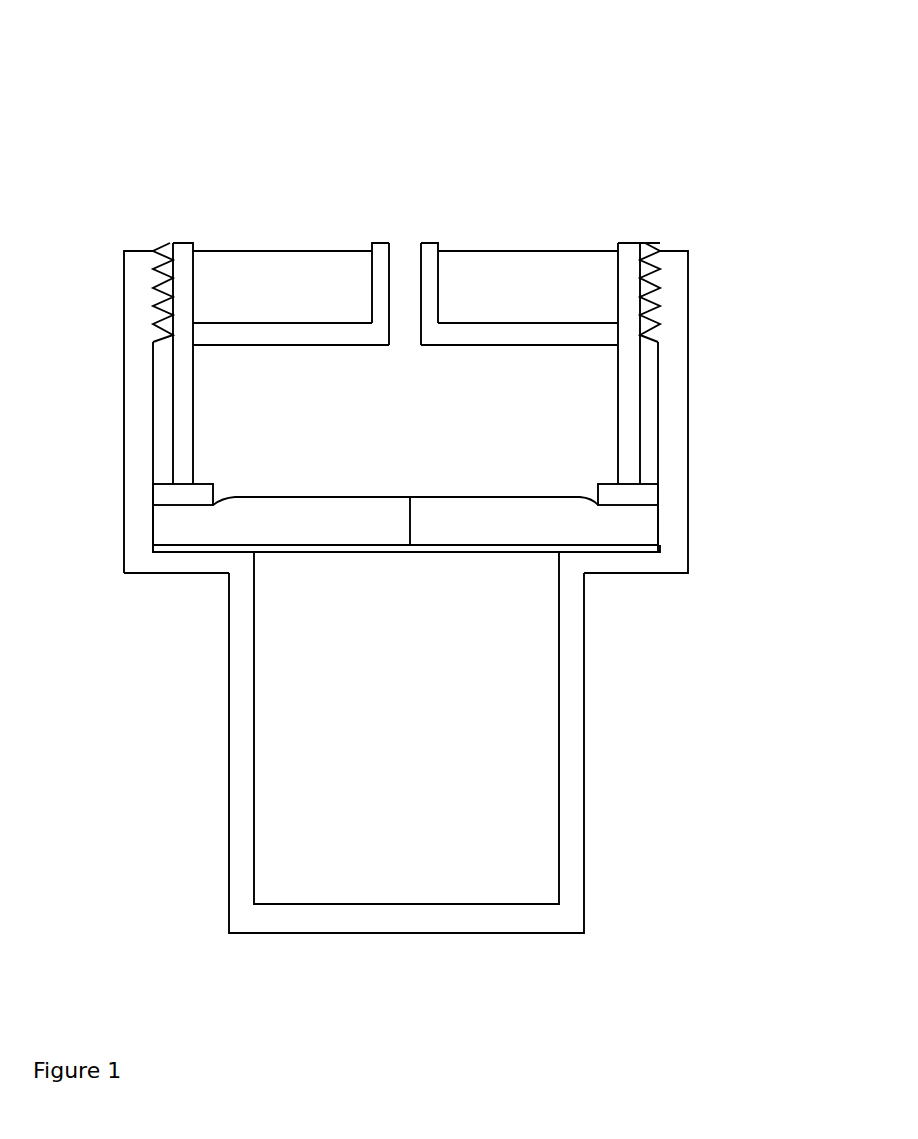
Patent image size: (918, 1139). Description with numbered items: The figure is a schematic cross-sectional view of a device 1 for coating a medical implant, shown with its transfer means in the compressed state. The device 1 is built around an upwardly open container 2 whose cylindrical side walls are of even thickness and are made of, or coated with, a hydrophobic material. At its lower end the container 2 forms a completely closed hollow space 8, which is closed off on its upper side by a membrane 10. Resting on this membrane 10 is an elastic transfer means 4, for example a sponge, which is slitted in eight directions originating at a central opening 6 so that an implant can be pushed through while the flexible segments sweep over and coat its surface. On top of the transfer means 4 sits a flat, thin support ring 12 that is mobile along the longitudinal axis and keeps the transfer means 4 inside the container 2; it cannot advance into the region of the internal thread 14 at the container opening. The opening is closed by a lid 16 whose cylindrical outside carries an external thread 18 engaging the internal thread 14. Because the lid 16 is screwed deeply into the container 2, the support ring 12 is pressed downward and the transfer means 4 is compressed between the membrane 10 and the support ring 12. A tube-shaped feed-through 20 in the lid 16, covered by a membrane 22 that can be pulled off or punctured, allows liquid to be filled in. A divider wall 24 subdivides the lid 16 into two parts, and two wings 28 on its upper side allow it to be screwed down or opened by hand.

The device 1 is at (145, 78).
The container 2 is at (242, 737).
The elastic transfer means 4 is at (624, 528).
The opening 6 is at (414, 512).
The hollow space 8 is at (474, 780).
The membrane 10 is at (630, 548).
The support ring 12 is at (183, 492).
The internal thread 14 is at (663, 308).
The lid 16 is at (277, 182).
The external thread 18 is at (642, 297).
The tube-shaped feed-through 20 is at (403, 297).
The membrane 22 is at (405, 238).
The divider wall 24 is at (493, 333).
The wings 28 is at (235, 283).